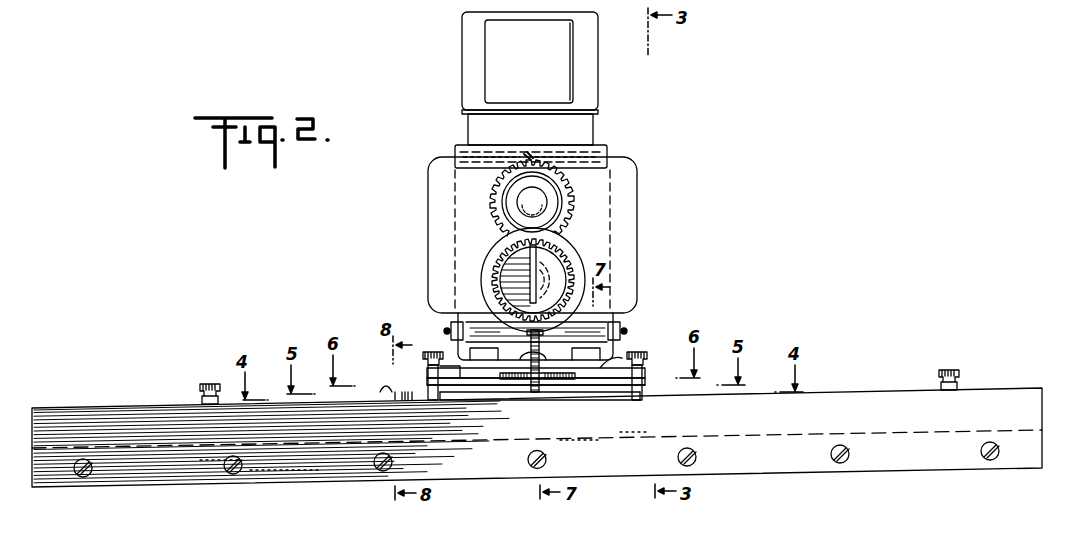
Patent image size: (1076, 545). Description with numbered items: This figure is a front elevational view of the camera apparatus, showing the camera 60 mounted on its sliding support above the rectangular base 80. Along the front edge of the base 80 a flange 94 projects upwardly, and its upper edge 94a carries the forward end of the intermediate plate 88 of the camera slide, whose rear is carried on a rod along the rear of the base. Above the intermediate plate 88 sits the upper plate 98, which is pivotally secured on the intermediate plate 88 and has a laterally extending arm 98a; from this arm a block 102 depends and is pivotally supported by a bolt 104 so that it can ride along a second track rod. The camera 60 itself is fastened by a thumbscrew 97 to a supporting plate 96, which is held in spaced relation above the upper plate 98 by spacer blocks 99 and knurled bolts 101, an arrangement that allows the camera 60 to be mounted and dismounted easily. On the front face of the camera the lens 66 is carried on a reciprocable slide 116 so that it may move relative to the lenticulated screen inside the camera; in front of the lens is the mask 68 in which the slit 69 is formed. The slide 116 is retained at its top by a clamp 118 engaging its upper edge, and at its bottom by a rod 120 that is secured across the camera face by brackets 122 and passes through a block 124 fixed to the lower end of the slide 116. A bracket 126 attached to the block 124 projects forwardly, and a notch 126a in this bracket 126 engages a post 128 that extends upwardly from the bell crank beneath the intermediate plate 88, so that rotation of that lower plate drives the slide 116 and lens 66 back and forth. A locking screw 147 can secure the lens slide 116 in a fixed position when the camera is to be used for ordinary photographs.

The camera 60 is at (598, 140).
The lens 66 is at (566, 255).
The mask 68 is at (500, 262).
The slit 69 is at (510, 250).
The base 80 is at (1016, 432).
The intermediate plate 88 is at (600, 392).
The flange 94 is at (50, 0).
The upper edge of flange 94a is at (110, 407).
The supporting plate 96 is at (622, 370).
The thumbscrew 97 is at (533, 390).
The upper plate 98 is at (645, 395).
The laterally extending arm 98a is at (388, 386).
The spacer blocks 99 is at (430, 380).
The knurled bolts 101 is at (433, 354).
The block 102 is at (410, 396).
The bolt 104 is at (425, 372).
The reciprocable slide 116 is at (430, 199).
The clamp 118 is at (458, 160).
The rod 120 is at (458, 318).
The brackets 122 is at (458, 325).
The block 124 is at (590, 322).
The bracket 126 is at (558, 380).
The notch 126a is at (495, 330).
The post 128 is at (538, 385).
The locking screw 147 is at (527, 162).